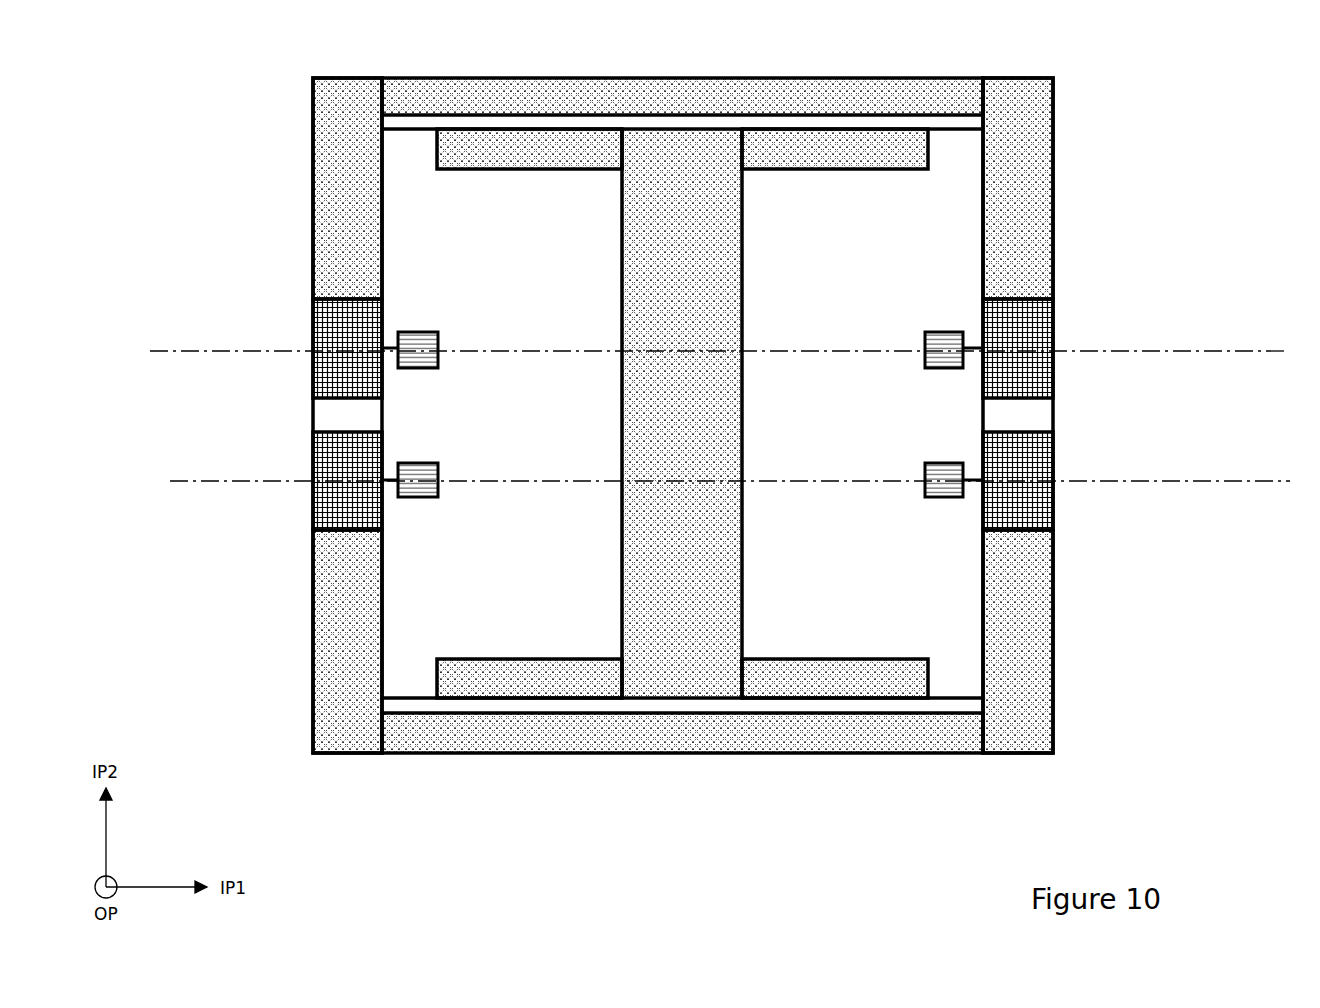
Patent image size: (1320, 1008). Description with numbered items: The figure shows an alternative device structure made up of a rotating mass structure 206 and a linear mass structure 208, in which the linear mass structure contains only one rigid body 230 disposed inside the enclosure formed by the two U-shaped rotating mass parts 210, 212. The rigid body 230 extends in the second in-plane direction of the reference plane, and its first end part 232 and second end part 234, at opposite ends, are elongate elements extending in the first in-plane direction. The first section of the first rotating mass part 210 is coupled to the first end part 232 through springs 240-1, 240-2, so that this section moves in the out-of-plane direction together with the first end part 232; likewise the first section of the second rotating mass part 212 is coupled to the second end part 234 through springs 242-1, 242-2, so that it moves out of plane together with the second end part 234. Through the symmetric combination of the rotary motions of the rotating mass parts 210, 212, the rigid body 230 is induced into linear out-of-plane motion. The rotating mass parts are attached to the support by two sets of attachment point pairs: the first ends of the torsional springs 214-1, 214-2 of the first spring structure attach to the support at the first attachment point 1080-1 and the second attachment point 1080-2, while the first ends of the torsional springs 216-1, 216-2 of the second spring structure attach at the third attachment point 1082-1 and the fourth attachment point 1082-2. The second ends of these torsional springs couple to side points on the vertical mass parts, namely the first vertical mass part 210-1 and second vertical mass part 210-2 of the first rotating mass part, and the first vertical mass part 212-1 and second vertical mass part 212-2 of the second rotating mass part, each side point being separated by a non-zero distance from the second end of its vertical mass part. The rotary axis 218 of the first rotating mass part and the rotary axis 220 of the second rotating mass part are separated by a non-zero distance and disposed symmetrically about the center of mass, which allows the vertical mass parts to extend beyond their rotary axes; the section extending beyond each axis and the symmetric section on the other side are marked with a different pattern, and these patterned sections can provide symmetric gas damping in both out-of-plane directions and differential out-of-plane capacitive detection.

The rotating mass structure 206 is at (1043, 250).
The linear mass structure 208 is at (750, 657).
The first rotating mass part 210 is at (865, 78).
The first vertical mass part of the first rotating mass part 210-1 is at (1033, 118).
The second vertical mass part of the first rotating mass part 210-2 is at (333, 213).
The second rotating mass part 212 is at (533, 743).
The first vertical mass part of the second rotating mass part 212-1 is at (1023, 605).
The second vertical mass part of the second rotating mass part 212-2 is at (322, 605).
The first torsional spring of the first spring structure 214-1 is at (980, 343).
The second torsional spring of the first spring structure 214-2 is at (388, 345).
The first torsional spring of the second spring structure 216-1 is at (975, 490).
The second torsional spring of the second spring structure 216-2 is at (380, 480).
The rotary axis of the first rotating mass part 218 is at (1172, 338).
The rotary axis of the second rotating mass part 220 is at (1176, 480).
The rigid body 230 is at (710, 327).
The first end part 232 is at (593, 166).
The second end part 234 is at (480, 677).
The spring 240-1 is at (973, 135).
The spring 240-2 is at (390, 137).
The spring 242-1 is at (957, 700).
The spring 242-2 is at (398, 695).
The first attachment point 1080-1 is at (923, 340).
The second attachment point 1080-2 is at (441, 341).
The third attachment point 1082-1 is at (923, 482).
The fourth attachment point 1082-2 is at (443, 488).